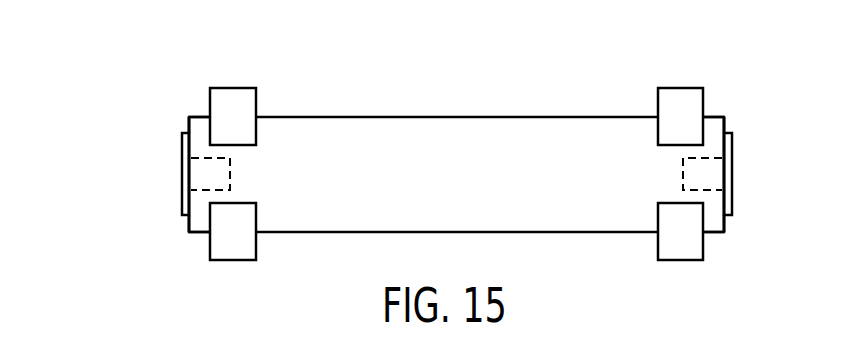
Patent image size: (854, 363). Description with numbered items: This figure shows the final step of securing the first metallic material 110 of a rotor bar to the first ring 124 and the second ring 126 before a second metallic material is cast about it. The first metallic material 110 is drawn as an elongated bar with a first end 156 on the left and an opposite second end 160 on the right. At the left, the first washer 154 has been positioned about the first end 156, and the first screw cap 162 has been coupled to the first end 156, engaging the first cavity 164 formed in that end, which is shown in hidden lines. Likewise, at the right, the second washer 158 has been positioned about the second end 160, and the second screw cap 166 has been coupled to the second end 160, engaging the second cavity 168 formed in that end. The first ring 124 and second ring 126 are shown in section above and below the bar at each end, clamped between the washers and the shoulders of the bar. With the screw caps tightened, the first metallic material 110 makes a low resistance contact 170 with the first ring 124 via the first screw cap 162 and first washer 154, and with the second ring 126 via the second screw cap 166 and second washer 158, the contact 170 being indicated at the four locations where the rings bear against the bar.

The first metallic material 110 is at (477, 183).
The first ring 124 is at (250, 127).
The second ring 126 is at (698, 127).
The first washer 154 is at (203, 117).
The first end 156 is at (168, 153).
The second washer 158 is at (712, 117).
The second end 160 is at (743, 157).
The first screw cap 162 is at (182, 172).
The first cavity 164 is at (223, 166).
The second screw cap 166 is at (732, 176).
The second cavity 168 is at (691, 170).
The low resistance contact 170 is at (198, 97).